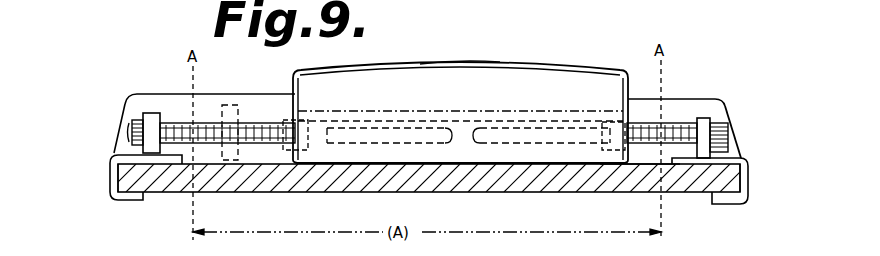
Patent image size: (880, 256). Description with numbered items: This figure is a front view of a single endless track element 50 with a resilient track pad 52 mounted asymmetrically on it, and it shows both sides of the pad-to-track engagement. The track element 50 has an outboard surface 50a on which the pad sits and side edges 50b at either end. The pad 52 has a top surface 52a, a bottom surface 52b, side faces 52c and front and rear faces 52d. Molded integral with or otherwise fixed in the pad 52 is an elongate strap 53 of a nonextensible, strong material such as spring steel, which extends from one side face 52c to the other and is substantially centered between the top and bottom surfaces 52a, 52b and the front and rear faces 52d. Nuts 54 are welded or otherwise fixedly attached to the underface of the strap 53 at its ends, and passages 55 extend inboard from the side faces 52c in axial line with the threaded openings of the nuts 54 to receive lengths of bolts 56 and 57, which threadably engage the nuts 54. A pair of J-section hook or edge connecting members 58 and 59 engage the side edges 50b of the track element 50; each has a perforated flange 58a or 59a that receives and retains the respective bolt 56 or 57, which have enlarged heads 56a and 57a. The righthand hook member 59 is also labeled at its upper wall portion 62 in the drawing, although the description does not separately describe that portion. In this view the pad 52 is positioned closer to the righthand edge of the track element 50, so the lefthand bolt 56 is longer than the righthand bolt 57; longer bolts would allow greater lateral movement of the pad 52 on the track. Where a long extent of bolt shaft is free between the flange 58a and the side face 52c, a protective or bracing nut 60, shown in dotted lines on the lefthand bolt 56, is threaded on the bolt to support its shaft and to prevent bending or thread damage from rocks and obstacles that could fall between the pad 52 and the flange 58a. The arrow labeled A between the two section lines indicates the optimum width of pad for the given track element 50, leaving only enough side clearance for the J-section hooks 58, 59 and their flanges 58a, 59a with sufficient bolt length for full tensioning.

The endless track element 50 is at (216, 199).
The outboard surface 50a is at (636, 164).
The side edges 50b is at (112, 180).
The track pad 52 is at (447, 50).
The top surface 52a is at (572, 67).
The bottom surface 52b is at (368, 165).
The side faces 52c is at (297, 86).
The front and rear faces 52d is at (526, 80).
The strap 53 is at (444, 97).
The nuts 54 is at (335, 118).
The passages 55 is at (522, 100).
The bolt 56 is at (200, 122).
The enlarged head 56a is at (131, 136).
The bolt 57 is at (690, 125).
The enlarged head 57a is at (735, 141).
The J-section hook member 58 is at (110, 172).
The perforated flange 58a is at (126, 105).
The J-section hook member 59 is at (750, 163).
The perforated flange 59a is at (703, 117).
The protective nut 60 is at (230, 105).
The top wall of right bracket 62 is at (672, 99).